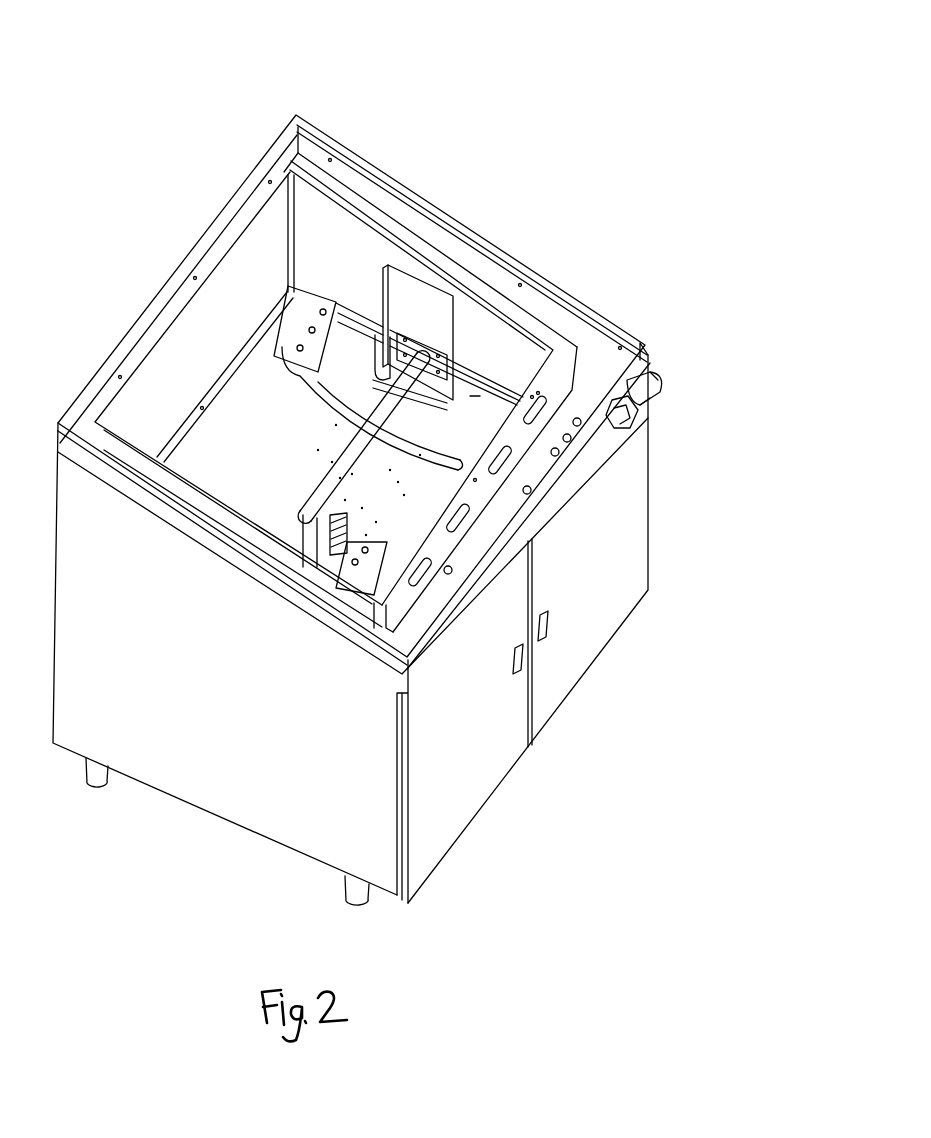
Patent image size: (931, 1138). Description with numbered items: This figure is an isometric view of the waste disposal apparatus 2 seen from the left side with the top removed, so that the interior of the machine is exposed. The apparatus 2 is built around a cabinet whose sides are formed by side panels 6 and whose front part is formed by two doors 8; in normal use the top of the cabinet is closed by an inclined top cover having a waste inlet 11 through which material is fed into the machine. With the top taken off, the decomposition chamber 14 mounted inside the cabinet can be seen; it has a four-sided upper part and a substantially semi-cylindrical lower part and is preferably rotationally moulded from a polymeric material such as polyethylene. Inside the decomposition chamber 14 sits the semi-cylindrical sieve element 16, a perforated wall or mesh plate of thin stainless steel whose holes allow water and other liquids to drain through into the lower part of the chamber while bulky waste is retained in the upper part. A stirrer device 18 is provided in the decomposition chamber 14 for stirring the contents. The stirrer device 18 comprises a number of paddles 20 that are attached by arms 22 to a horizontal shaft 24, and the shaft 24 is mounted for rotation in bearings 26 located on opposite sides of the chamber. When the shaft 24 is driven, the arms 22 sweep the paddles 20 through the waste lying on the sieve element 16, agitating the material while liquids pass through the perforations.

The waste disposal apparatus 2 is at (500, 108).
The side panels 6 is at (243, 800).
The doors 8 is at (467, 800).
The waste inlet 11 is at (477, 385).
The decomposition chamber 14 is at (147, 387).
The sieve element 16 is at (430, 482).
The stirrer device 18 is at (323, 492).
The paddles 20 is at (295, 327).
The arms 22 is at (330, 380).
The horizontal shaft 24 is at (348, 462).
The bearings 26 is at (412, 317).